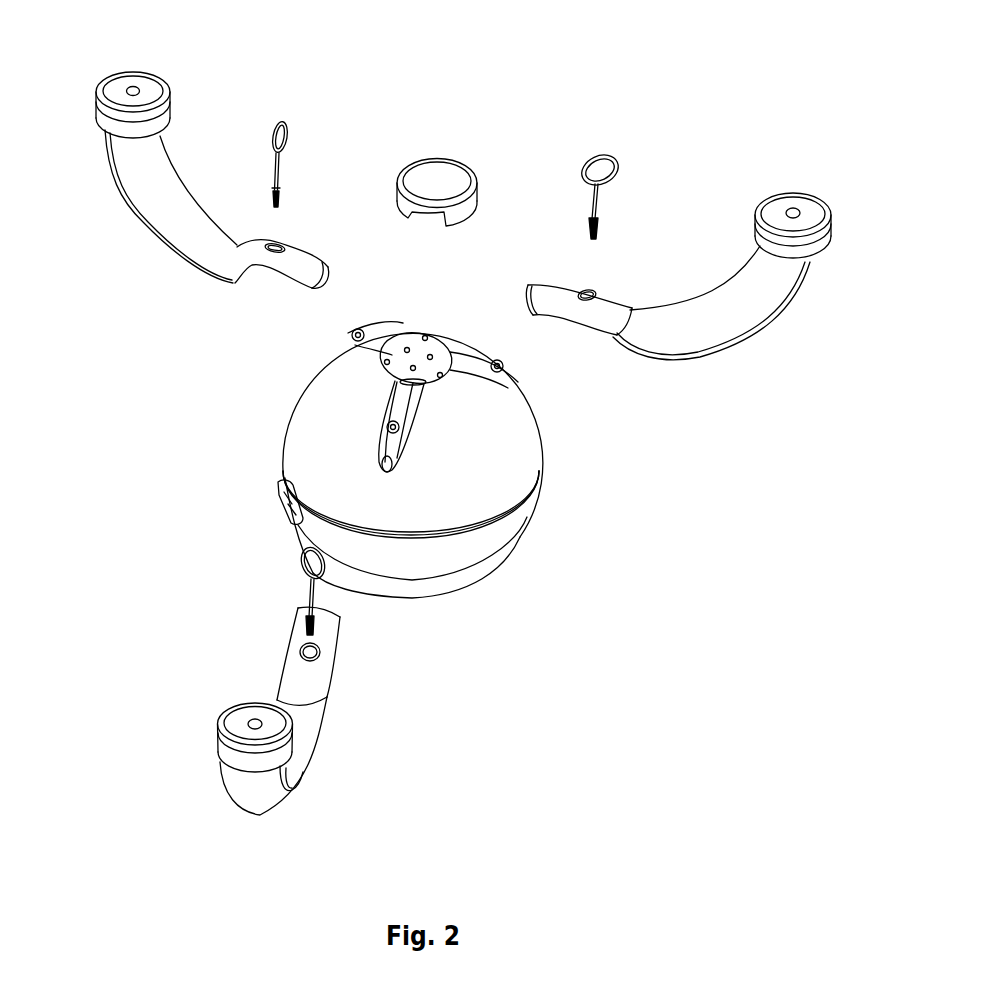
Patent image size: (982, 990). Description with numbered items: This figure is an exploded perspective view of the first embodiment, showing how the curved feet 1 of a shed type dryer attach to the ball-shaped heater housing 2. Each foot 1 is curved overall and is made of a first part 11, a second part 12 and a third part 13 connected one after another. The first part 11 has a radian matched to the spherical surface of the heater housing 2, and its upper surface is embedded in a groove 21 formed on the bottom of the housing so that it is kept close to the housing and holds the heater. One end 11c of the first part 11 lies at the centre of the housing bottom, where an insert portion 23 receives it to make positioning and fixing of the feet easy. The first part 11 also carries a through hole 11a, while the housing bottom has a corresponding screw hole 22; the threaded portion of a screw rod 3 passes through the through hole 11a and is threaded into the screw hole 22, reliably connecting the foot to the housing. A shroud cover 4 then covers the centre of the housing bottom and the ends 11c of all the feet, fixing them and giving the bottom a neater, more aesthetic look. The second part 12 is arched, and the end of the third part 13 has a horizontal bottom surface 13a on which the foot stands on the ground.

The foot 1 is at (230, 151).
The heater housing 2 is at (433, 440).
The screw rod 3 is at (584, 160).
The shroud cover 4 is at (437, 172).
The first part 11 is at (537, 319).
The through hole 11a is at (589, 291).
The end of the first part 11c is at (528, 297).
The second part 12 is at (722, 346).
The third part 13 is at (757, 185).
The horizontal bottom surface 13a is at (786, 207).
The groove 21 is at (392, 389).
The screw hole 22 is at (385, 424).
The insert portion 23 is at (413, 343).